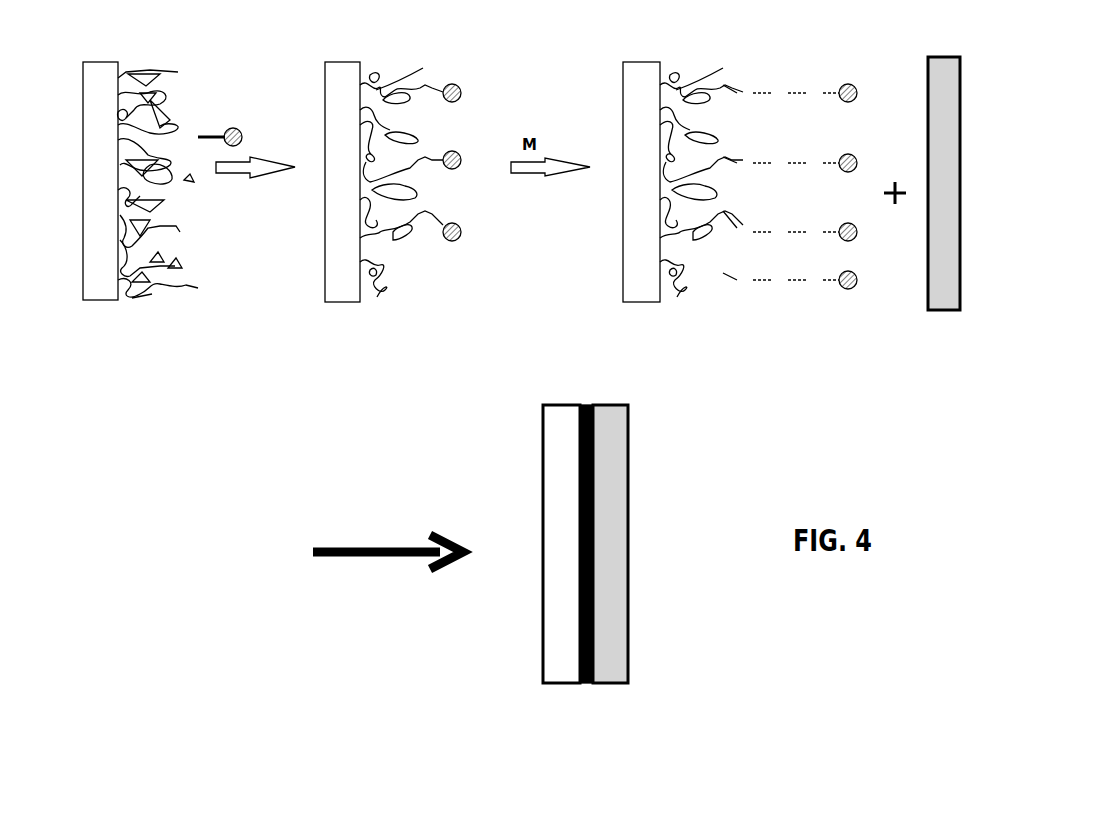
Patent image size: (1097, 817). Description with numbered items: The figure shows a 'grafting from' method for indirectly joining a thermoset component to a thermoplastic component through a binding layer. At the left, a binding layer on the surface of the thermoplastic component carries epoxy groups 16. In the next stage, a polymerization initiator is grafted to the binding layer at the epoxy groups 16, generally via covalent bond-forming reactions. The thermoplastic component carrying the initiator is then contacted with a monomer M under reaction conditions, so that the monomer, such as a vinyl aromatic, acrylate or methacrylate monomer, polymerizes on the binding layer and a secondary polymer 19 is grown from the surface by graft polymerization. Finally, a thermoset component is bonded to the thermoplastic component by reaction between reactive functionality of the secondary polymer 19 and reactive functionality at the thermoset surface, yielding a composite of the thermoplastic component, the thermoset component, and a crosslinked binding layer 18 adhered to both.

The epoxy groups 16 is at (118, 310).
The crosslinked binding layer 18 is at (581, 406).
The secondary polymer 19 is at (857, 310).